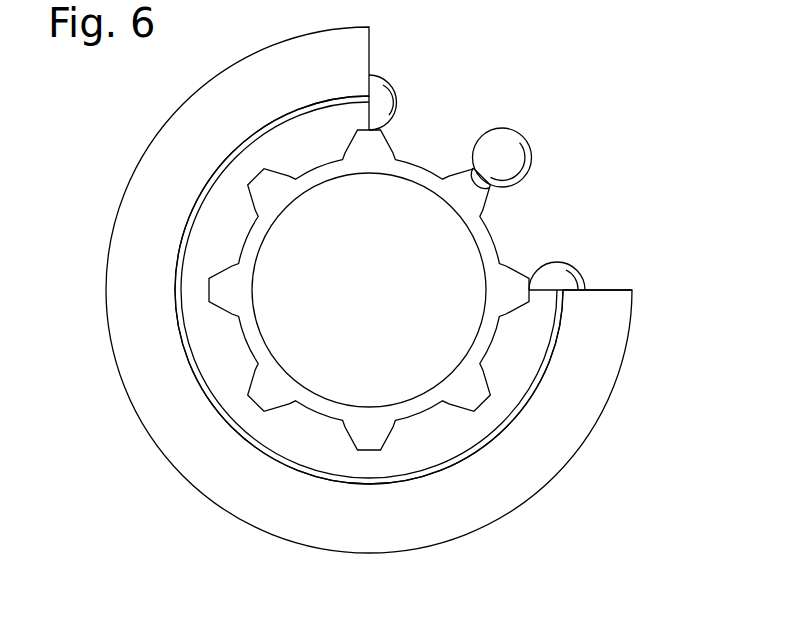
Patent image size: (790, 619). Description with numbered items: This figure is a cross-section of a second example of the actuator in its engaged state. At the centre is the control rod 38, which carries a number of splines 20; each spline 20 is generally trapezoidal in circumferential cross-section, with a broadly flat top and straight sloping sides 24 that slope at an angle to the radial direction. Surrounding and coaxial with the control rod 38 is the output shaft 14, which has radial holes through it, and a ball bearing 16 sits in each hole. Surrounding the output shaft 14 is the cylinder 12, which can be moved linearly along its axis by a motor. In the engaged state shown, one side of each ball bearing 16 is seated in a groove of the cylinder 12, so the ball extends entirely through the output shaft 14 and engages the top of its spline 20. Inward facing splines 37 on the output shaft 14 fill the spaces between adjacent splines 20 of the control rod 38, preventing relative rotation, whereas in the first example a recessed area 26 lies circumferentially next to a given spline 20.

The cylinder 12 is at (177, 408).
The output shaft 14 is at (528, 355).
The ball bearing 16 is at (568, 268).
The spline 20 is at (488, 198).
The sloping side 24 is at (487, 208).
The recessed area 26 is at (433, 170).
The inward facing spline 37 is at (428, 425).
The control rod 38 is at (477, 393).